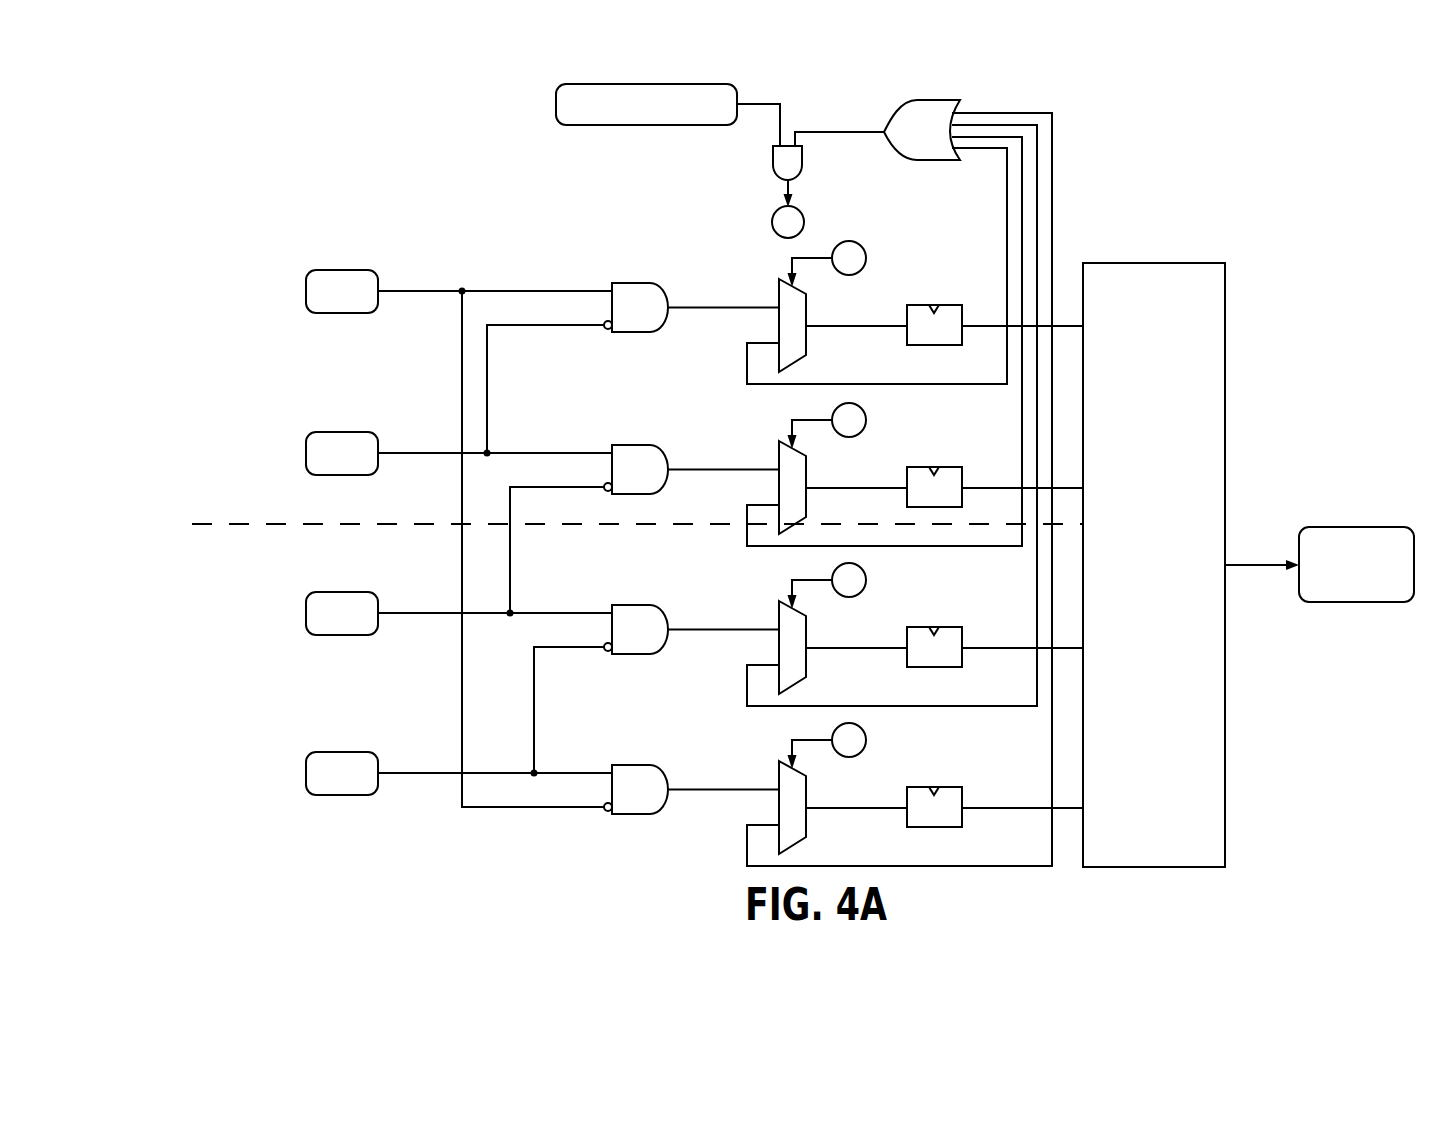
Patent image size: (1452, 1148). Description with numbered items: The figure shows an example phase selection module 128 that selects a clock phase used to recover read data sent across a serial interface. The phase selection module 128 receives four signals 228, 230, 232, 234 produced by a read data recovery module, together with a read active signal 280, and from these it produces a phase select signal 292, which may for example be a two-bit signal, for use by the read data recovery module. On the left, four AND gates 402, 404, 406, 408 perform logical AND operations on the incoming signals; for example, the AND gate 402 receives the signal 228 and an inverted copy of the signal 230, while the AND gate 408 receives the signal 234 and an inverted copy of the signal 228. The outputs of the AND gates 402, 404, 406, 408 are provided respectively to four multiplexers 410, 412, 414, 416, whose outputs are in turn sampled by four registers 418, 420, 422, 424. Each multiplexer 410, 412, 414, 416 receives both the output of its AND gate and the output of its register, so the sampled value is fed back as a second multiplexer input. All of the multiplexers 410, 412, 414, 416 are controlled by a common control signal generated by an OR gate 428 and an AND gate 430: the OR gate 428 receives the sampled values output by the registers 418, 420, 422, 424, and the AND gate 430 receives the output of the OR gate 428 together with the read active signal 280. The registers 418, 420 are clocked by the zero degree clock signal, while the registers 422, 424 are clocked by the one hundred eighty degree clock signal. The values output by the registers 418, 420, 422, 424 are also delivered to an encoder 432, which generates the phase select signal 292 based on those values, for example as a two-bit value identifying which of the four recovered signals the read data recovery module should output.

The phase selection module 128 is at (367, 137).
The signal 228 is at (412, 290).
The signal 230 is at (412, 452).
The signal 232 is at (412, 612).
The signal 234 is at (412, 772).
The read active signal 280 is at (556, 112).
The phase select signal 292 is at (1353, 527).
The AND gate 402 is at (636, 283).
The AND gate 404 is at (636, 445).
The AND gate 406 is at (636, 605).
The AND gate 408 is at (636, 765).
The multiplexer 410 is at (779, 297).
The multiplexer 412 is at (779, 459).
The multiplexer 414 is at (779, 619).
The multiplexer 416 is at (779, 779).
The register 418 is at (947, 305).
The register 420 is at (947, 467).
The register 422 is at (947, 627).
The register 424 is at (947, 787).
The OR gate 428 is at (893, 118).
The AND gate 430 is at (773, 166).
The encoder 432 is at (1155, 263).